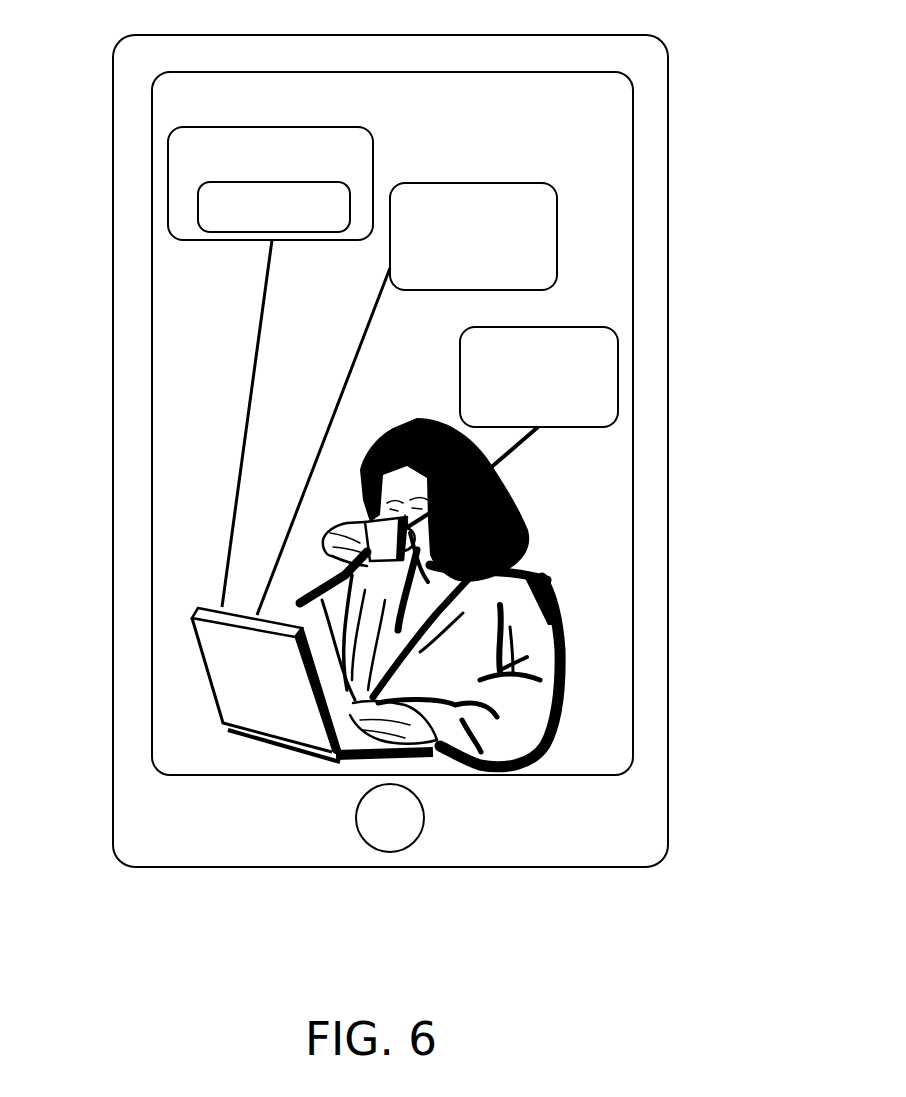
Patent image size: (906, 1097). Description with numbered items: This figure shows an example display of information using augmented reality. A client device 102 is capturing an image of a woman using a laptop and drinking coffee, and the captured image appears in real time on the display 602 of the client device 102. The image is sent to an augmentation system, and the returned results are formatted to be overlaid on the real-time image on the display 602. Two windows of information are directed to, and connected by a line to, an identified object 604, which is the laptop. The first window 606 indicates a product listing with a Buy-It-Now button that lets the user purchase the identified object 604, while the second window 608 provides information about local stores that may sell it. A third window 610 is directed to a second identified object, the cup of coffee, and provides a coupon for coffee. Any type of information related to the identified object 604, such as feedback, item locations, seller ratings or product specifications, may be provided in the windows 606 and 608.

The client device 102 is at (668, 245).
The display 602 is at (633, 545).
The identified object 604 is at (213, 698).
The first window 606 is at (377, 133).
The second window 608 is at (465, 183).
The third window 610 is at (538, 327).